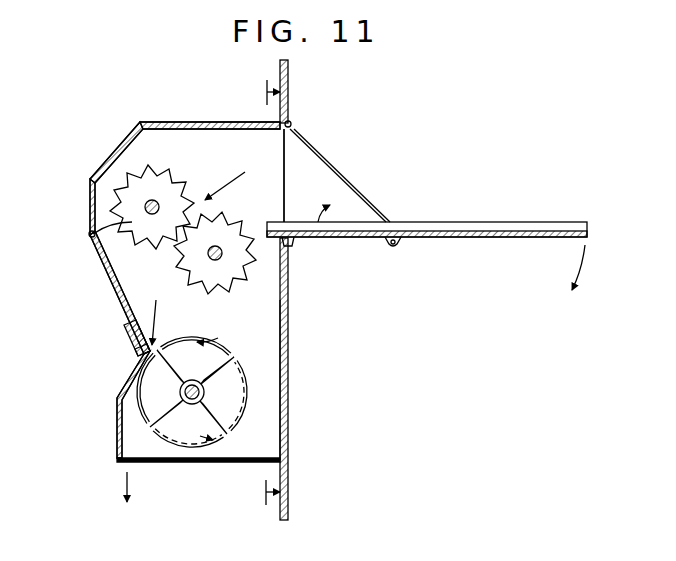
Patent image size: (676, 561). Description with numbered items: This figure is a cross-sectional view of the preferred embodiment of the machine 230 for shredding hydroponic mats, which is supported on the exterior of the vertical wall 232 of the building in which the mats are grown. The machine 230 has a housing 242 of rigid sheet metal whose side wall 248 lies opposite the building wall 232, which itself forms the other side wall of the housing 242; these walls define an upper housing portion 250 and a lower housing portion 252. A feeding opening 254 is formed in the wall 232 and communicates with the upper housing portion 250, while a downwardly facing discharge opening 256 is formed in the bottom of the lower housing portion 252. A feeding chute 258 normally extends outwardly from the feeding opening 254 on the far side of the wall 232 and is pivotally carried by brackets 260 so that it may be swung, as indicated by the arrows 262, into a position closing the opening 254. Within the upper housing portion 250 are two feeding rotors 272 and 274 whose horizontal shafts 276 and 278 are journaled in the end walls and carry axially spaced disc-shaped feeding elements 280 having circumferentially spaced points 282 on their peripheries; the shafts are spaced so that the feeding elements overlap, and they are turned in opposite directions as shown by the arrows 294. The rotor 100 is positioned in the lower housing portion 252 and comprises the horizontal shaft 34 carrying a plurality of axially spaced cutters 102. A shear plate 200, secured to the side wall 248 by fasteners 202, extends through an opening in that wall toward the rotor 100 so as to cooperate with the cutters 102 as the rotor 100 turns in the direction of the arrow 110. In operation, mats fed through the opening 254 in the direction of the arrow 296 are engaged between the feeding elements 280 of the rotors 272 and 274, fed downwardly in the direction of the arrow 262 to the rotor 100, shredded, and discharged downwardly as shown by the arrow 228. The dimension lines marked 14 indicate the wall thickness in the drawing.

The machine for shredding hydroponic mats 230 is at (70, 141).
The housing 242 is at (175, 112).
The upper housing portion 250 is at (212, 124).
The points 282 is at (118, 170).
The side wall 248 is at (90, 216).
The feeding elements 280 is at (150, 209).
The shaft 276 is at (110, 246).
The discharge opening 256 is at (142, 452).
The arrow 228 is at (128, 493).
The rotor 272 is at (135, 168).
The rotor 274 is at (222, 217).
The arrows 294 is at (148, 182).
The shaft 278 is at (222, 258).
The arrow 296 is at (222, 178).
The rotor 100 is at (208, 347).
The arrow 110 is at (187, 348).
The cutters 102 is at (215, 438).
The shaft 34 is at (205, 393).
The shear plate 200 is at (128, 339).
The fasteners 202 is at (132, 343).
The arrows 262 is at (157, 300).
The vertical wall 232 is at (288, 320).
The lower housing portion 252 is at (272, 424).
The feeding opening 254 is at (278, 191).
The brackets 260 is at (335, 168).
The feeding chute 258 is at (437, 240).
The wall thickness 14 is at (288, 92).